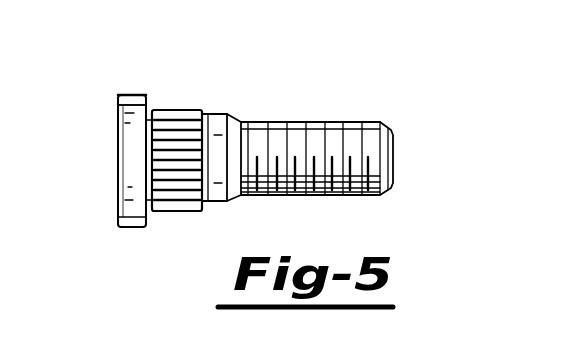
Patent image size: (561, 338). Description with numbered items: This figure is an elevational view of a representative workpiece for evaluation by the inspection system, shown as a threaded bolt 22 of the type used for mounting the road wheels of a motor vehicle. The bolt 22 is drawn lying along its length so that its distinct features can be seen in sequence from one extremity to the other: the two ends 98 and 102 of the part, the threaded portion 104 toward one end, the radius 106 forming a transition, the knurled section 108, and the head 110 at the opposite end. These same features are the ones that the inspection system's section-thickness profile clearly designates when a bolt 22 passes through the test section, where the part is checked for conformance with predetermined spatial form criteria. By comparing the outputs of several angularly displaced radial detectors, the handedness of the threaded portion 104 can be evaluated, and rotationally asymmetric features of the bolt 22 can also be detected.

The threaded bolt 22 is at (368, 103).
The end 98 is at (393, 163).
The end 102 is at (84, 161).
The threaded portion 104 is at (369, 190).
The radius 106 is at (232, 113).
The knurled section 108 is at (177, 109).
The head 110 is at (128, 95).